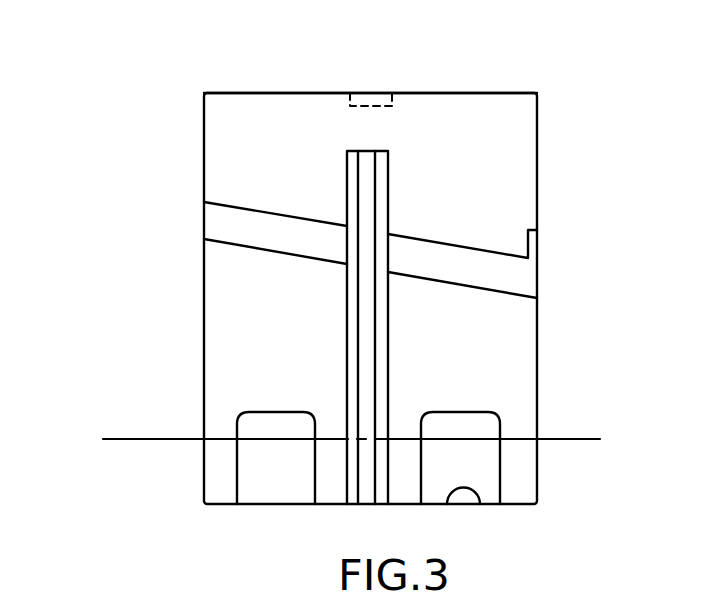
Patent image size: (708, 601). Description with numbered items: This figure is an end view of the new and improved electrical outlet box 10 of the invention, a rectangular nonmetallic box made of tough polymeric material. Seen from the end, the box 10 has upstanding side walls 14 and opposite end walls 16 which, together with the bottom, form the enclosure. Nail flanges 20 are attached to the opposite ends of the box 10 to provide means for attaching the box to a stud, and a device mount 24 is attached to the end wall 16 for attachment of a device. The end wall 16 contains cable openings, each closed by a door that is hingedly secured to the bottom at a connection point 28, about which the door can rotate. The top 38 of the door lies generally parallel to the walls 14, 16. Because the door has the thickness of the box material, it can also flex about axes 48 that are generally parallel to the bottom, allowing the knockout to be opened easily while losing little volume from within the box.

The electrical outlet box 10 is at (512, 47).
The upstanding side walls 14 is at (204, 330).
The end walls 16 is at (482, 188).
The nail flanges 20 is at (250, 233).
The device mounts 24 is at (370, 100).
The connection point 28 is at (480, 504).
The top of door 38 is at (474, 411).
The axes 48 is at (158, 440).